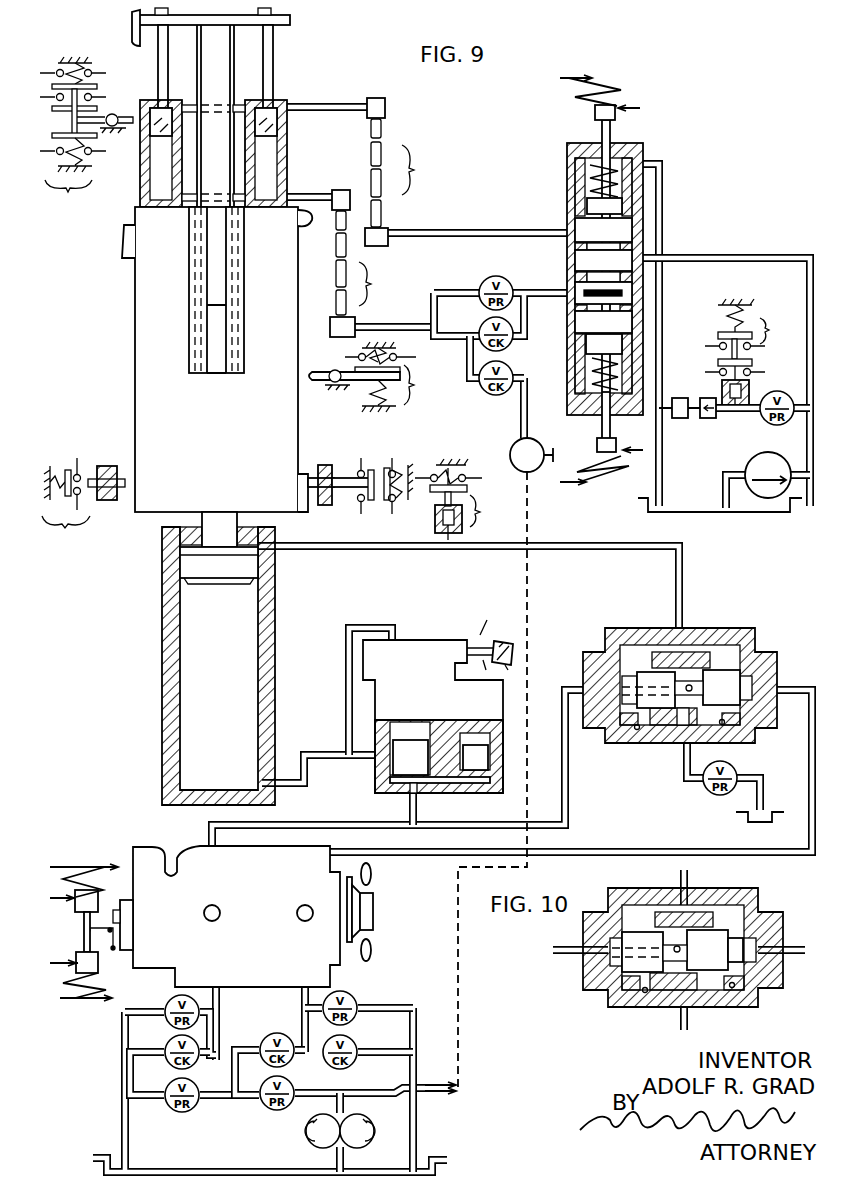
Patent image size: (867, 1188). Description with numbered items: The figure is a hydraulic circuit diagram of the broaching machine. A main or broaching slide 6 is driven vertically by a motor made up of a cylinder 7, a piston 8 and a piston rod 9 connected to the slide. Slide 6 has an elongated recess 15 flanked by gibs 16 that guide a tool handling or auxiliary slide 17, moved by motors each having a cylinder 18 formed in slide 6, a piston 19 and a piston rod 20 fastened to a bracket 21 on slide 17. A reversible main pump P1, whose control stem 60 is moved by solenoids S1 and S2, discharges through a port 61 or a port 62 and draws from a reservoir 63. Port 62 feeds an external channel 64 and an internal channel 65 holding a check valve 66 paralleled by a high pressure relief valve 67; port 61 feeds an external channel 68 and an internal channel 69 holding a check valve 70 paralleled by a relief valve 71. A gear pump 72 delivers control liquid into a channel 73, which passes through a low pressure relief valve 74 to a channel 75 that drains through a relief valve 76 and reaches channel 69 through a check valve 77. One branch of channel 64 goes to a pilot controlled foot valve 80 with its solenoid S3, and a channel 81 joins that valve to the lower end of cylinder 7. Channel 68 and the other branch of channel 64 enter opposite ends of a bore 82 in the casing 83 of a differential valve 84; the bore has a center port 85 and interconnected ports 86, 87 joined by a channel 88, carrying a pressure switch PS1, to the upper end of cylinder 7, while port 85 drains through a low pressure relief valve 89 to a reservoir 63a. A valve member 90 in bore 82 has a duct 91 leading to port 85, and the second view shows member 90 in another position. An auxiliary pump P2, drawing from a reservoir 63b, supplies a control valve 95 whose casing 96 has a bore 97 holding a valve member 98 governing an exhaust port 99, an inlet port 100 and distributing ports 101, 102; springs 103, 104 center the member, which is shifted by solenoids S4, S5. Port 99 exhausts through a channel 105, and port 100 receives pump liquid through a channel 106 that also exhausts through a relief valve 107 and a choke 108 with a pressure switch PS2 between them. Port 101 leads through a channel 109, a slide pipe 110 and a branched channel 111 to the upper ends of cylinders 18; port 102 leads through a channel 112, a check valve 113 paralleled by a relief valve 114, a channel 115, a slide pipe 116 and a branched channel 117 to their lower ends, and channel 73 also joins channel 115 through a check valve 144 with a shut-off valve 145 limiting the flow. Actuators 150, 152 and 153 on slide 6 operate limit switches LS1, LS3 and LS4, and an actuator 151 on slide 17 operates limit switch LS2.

In FIG. 9, the main or broaching slide 6 is at (228, 451).
In FIG. 9, the cylinder 7 is at (198, 658).
In FIG. 9, the piston 8 is at (215, 575).
In FIG. 9, the piston rod 9 is at (225, 541).
In FIG. 9, the elongated recess 15 is at (222, 365).
In FIG. 9, the guide bars or gibs 16 is at (191, 318).
In FIG. 9, the tool handling or auxiliary slide 17 is at (222, 61).
In FIG. 9, the cylinder 18 is at (150, 186).
In FIG. 9, the piston 19 is at (165, 130).
In FIG. 9, the piston rod 20 is at (160, 72).
In FIG. 9, the bracket 21 is at (291, 20).
In FIG. 9, the control stem 60 is at (121, 968).
In FIG. 9, the port 61 is at (298, 918).
In FIG. 9, the port 62 is at (218, 918).
In FIG. 9, the reservoir 63 is at (437, 1160).
In FIG. 9, the reservoir 63a is at (771, 811).
In FIG. 9, the reservoir 63b is at (712, 508).
In FIG. 9, the external channel 64 is at (327, 825).
In FIG. 10, the external channel 64 is at (562, 958).
In FIG. 9, the internal channel 65 is at (225, 999).
In FIG. 9, the check valve 66 is at (168, 1064).
In FIG. 9, the high pressure relief valve 67 is at (170, 1029).
In FIG. 9, the external channel 68 is at (645, 852).
In FIG. 10, the external channel 68 is at (794, 947).
In FIG. 9, the internal channel 69 is at (304, 1005).
In FIG. 9, the check valve 70 is at (352, 1043).
In FIG. 9, the high pressure relief valve 71 is at (352, 1002).
In FIG. 9, the gear pump 72 is at (318, 1142).
In FIG. 9, the channel 73 is at (522, 421).
In FIG. 9, the low pressure relief valve 74 is at (288, 1087).
In FIG. 9, the channel 75 is at (222, 1100).
In FIG. 9, the low pressure relief valve 76 is at (195, 1110).
In FIG. 9, the check valve 77 is at (268, 1039).
In FIG. 9, the pilot controlled foot valve 80 is at (431, 683).
In FIG. 9, the channel 81 is at (323, 753).
In FIG. 9, the bore 82 is at (618, 672).
In FIG. 10, the bore 82 is at (764, 988).
In FIG. 9, the casing 83 is at (612, 742).
In FIG. 10, the casing 83 is at (614, 996).
In FIG. 9, the differential valve 84 is at (690, 691).
In FIG. 10, the differential valve 84 is at (694, 946).
In FIG. 9, the center port 85 is at (680, 728).
In FIG. 10, the center port 85 is at (690, 1003).
In FIG. 9, the port 86 is at (637, 732).
In FIG. 10, the port 86 is at (648, 995).
In FIG. 9, the port 87 is at (728, 735).
In FIG. 10, the port 87 is at (735, 995).
In FIG. 9, the channel 88 is at (600, 545).
In FIG. 10, the channel 88 is at (680, 878).
In FIG. 9, the low pressure relief valve 89 is at (712, 797).
In FIG. 9, the valve member 90 is at (650, 680).
In FIG. 10, the valve member 90 is at (640, 942).
In FIG. 9, the duct 91 is at (693, 688).
In FIG. 10, the duct 91 is at (682, 951).
In FIG. 9, the control valve 95 is at (621, 275).
In FIG. 9, the casing 96 is at (570, 170).
In FIG. 9, the axial bore 97 is at (585, 390).
In FIG. 9, the valve member 98 is at (584, 350).
In FIG. 9, the exhaust port 99 is at (583, 326).
In FIG. 9, the inlet port 100 is at (584, 254).
In FIG. 9, the distributing port 101 is at (582, 226).
In FIG. 9, the distributing port 102 is at (582, 287).
In FIG. 9, the spring 103 is at (592, 376).
In FIG. 9, the spring 104 is at (574, 183).
In FIG. 9, the channel 105 is at (663, 201).
In FIG. 9, the channel 106 is at (779, 258).
In FIG. 9, the relief valve 107 is at (771, 421).
In FIG. 9, the choke 108 is at (695, 418).
In FIG. 9, the channel 109 is at (500, 233).
In FIG. 9, the slide pipe 110 is at (413, 172).
In FIG. 9, the branched channel 111 is at (318, 106).
In FIG. 9, the channel 112 is at (536, 292).
In FIG. 9, the check valve 113 is at (480, 326).
In FIG. 9, the relief valve 114 is at (480, 284).
In FIG. 9, the channel 115 is at (371, 327).
In FIG. 9, the slide pipe 116 is at (372, 263).
In FIG. 9, the branched channel 117 is at (312, 197).
In FIG. 9, the check valve 144 is at (483, 394).
In FIG. 9, the shut-off valve 145 is at (511, 457).
In FIG. 9, the actuator 150 is at (125, 255).
In FIG. 9, the actuator 151 is at (133, 30).
In FIG. 9, the actuator 152 is at (298, 496).
In FIG. 9, the actuator 153 is at (298, 222).
In FIG. 9, the solenoid S1 is at (79, 908).
In FIG. 9, the solenoid S2 is at (76, 976).
In FIG. 9, the solenoid S3 is at (493, 632).
In FIG. 9, the solenoid S4 is at (648, 95).
In FIG. 9, the solenoid S5 is at (605, 461).
In FIG. 9, the limit switch LS1 is at (83, 509).
In FIG. 9, the limit switch LS2 is at (83, 140).
In FIG. 9, the limit switch LS3 is at (366, 466).
In FIG. 9, the limit switch LS4 is at (383, 377).
In FIG. 9, the pressure switch PS1 is at (469, 499).
In FIG. 9, the pressure switch PS2 is at (715, 318).
In FIG. 9, the main pump P1 is at (268, 882).
In FIG. 9, the auxiliary pump P2 is at (729, 468).